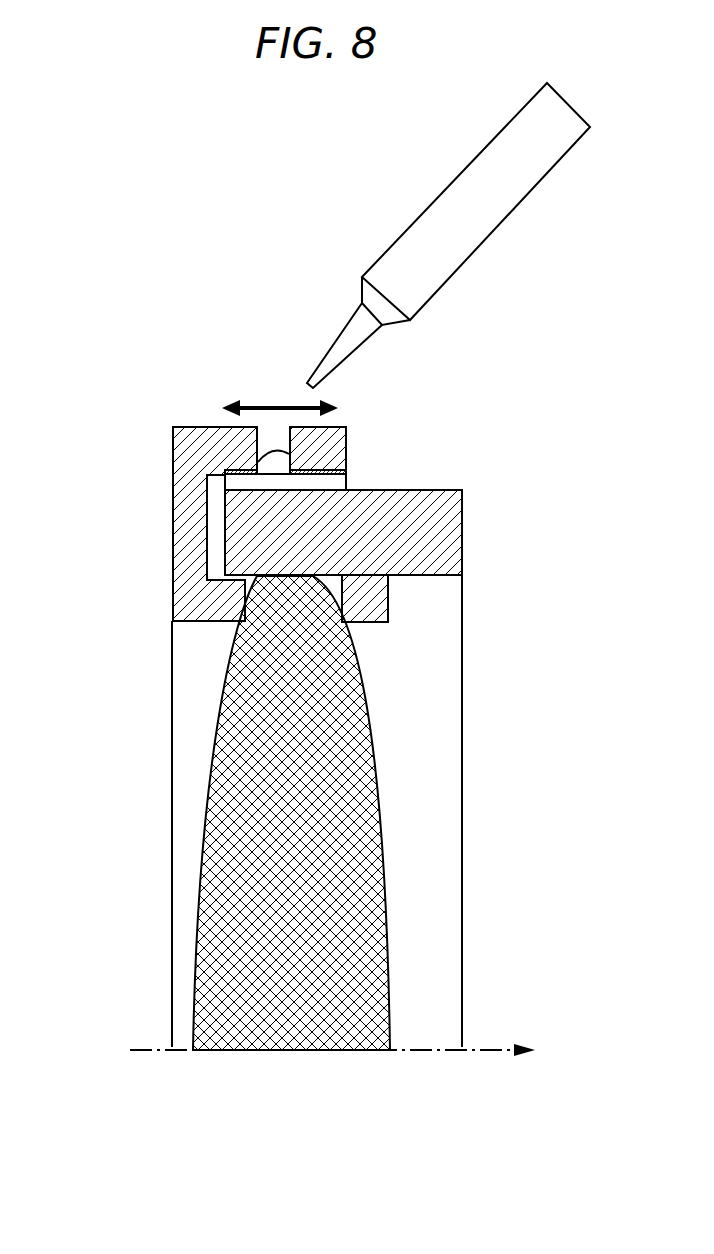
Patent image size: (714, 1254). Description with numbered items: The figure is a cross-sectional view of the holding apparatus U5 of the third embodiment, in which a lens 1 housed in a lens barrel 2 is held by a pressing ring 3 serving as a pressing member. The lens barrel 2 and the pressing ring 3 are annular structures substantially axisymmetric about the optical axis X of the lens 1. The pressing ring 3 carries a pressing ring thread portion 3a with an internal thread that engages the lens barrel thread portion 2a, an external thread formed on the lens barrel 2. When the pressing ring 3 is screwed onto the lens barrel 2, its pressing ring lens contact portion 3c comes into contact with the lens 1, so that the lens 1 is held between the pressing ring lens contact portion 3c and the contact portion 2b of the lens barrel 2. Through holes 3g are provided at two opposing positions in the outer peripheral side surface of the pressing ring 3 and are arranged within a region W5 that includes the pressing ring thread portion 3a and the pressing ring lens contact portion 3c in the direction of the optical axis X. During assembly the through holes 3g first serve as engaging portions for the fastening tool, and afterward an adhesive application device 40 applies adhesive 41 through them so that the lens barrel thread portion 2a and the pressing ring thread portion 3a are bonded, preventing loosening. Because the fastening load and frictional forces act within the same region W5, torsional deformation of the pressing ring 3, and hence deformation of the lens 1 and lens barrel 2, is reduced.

The lens 1 is at (345, 810).
The lens barrel 2 is at (452, 527).
The lens barrel thread portion 2a is at (347, 485).
The contact portion 2b is at (343, 612).
The pressing ring 3 is at (183, 462).
The pressing ring thread portion 3a is at (347, 472).
The pressing ring lens contact portion 3c is at (247, 622).
The through holes 3g is at (250, 442).
The adhesive application device 40 is at (433, 218).
The adhesive 41 is at (267, 462).
The holding apparatus U5 is at (223, 320).
The region W5 is at (283, 407).
The optical axis X is at (500, 1050).